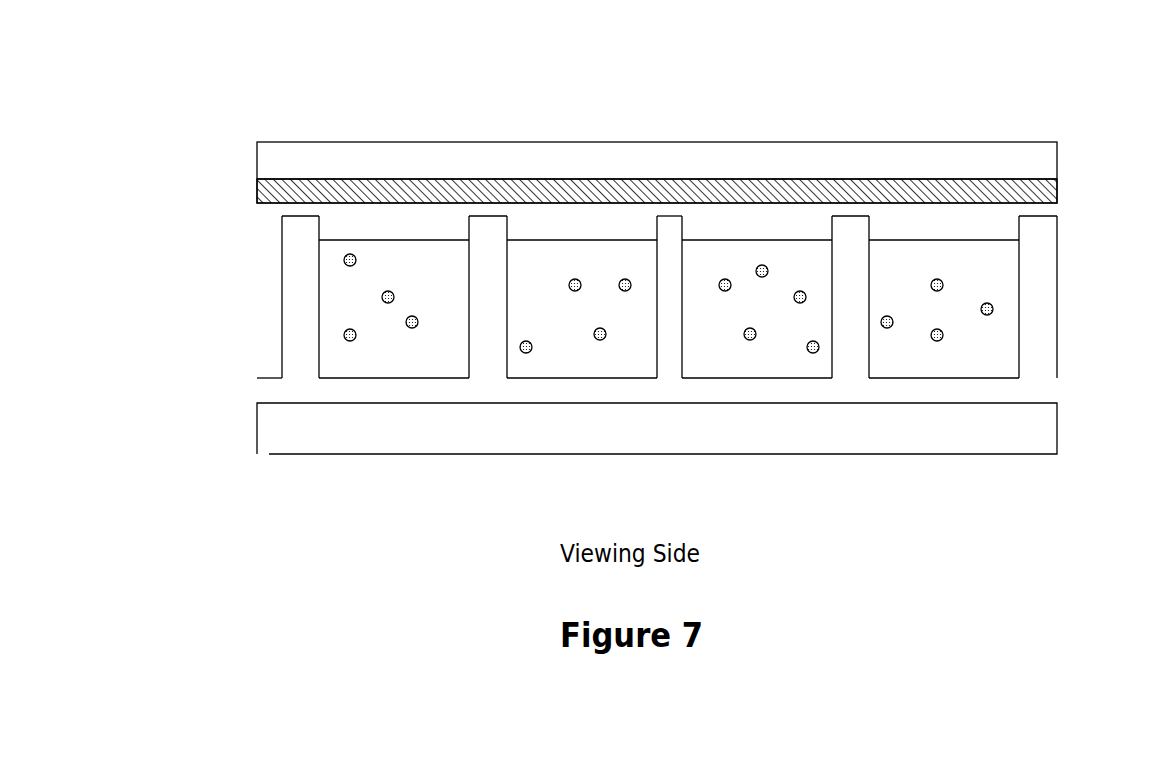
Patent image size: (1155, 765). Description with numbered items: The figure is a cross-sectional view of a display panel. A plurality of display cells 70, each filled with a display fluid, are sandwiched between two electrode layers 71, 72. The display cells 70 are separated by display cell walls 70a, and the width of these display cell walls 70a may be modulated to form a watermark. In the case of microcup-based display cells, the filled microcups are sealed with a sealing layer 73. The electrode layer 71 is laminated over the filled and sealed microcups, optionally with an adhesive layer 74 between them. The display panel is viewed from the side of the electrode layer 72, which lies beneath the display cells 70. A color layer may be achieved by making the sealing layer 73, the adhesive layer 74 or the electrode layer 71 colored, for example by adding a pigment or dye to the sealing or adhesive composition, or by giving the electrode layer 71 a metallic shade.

The display cell 70 is at (343, 291).
The display cell wall 70a is at (306, 341).
The electrode layer 71 is at (1034, 153).
The electrode layer 72 is at (1035, 417).
The sealing layer 73 is at (557, 214).
The adhesive layer 74 is at (769, 189).